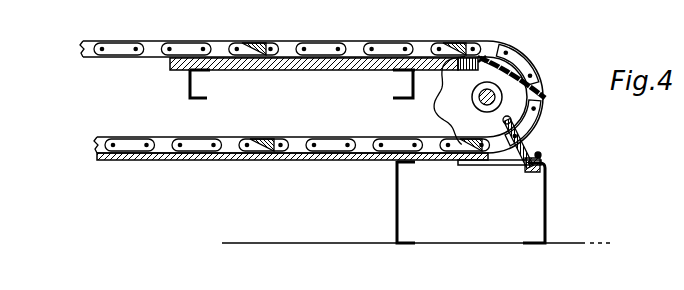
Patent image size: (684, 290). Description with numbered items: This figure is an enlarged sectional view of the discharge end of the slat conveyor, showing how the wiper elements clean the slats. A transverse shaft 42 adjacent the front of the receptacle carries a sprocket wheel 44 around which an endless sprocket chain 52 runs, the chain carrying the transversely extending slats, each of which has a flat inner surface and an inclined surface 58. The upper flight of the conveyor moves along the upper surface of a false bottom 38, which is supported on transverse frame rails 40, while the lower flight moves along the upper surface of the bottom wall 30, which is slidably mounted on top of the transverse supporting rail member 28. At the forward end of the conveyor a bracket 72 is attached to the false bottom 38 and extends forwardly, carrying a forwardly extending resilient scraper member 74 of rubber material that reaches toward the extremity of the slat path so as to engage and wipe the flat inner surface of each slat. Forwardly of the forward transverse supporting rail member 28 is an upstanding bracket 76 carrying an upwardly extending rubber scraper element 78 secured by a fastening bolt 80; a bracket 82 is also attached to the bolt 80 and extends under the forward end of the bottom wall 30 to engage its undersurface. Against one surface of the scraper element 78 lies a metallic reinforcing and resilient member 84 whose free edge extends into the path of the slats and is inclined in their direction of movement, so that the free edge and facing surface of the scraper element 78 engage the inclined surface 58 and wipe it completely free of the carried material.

The transverse supporting rail member 28 is at (393, 198).
The bottom wall 30 is at (310, 162).
The false bottom 38 is at (340, 70).
The transverse frame rail 40 is at (185, 88).
The transverse shaft 42 is at (503, 97).
The sprocket wheel 44 is at (450, 97).
The endless sprocket chain 52 is at (330, 43).
The inclined surface of slat 58 is at (258, 42).
The bracket 72 is at (482, 55).
The resilient scraper member 74 is at (514, 72).
The upstanding bracket 76 is at (548, 198).
The rubber scraper element 78 is at (523, 153).
The fastening bolt 80 is at (543, 155).
The bracket 82 is at (488, 166).
The metallic reinforcing and resilient member 84 is at (518, 172).